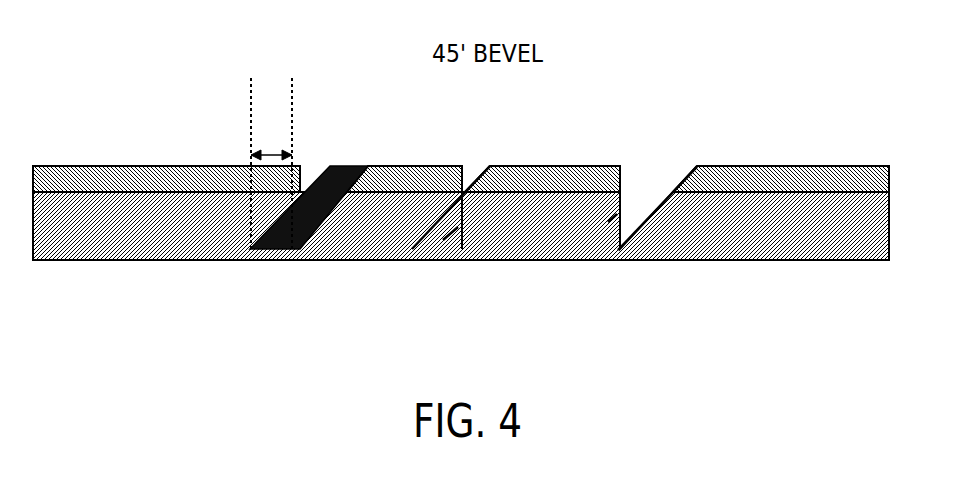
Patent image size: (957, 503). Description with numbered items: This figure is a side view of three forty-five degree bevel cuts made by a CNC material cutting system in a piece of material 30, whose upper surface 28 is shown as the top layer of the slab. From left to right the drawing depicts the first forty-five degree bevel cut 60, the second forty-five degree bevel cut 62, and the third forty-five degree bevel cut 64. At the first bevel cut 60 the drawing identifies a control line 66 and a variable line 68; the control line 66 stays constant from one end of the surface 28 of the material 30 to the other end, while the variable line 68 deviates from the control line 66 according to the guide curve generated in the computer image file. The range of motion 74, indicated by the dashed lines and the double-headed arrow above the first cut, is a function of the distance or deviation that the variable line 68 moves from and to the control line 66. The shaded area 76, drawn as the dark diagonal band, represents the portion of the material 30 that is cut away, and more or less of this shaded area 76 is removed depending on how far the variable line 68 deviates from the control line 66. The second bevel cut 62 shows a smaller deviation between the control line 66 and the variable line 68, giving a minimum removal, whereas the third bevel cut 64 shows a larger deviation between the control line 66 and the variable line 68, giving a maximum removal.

The surface 28 is at (753, 177).
The material 30 is at (805, 242).
The first 45 degree bevel cut 60 is at (310, 172).
The second 45 degree bevel cut 62 is at (472, 177).
The third 45 degree bevel cut 64 is at (648, 192).
The control line 66 is at (316, 207).
The variable line 68 is at (328, 210).
The range of motion 74 is at (270, 153).
The shaded area 76 is at (347, 163).